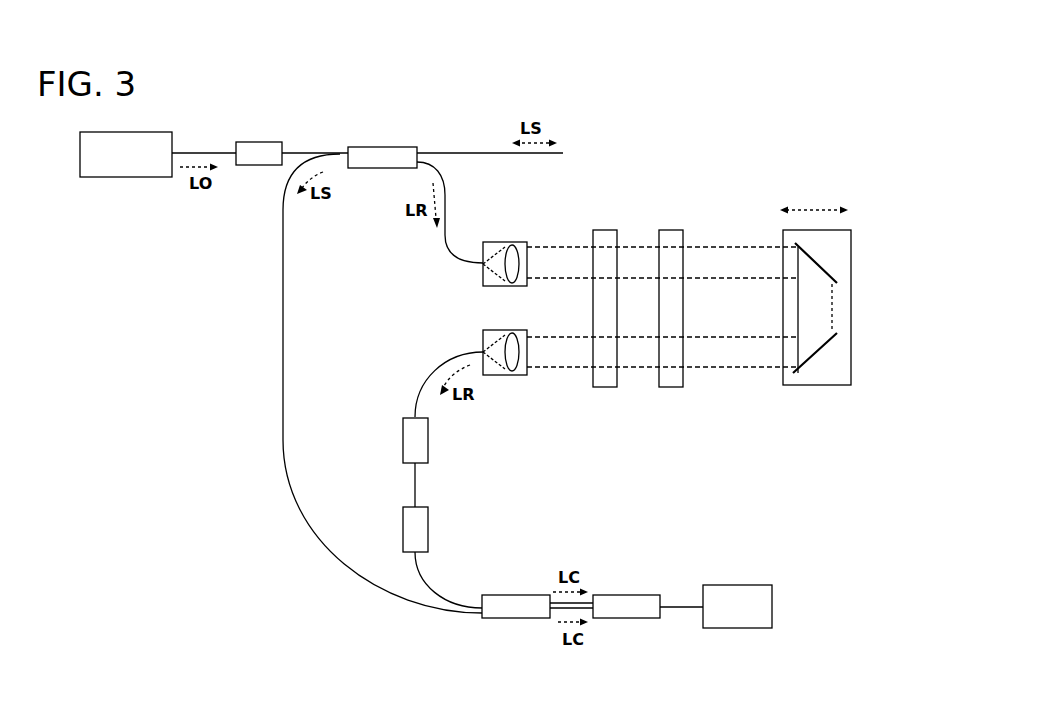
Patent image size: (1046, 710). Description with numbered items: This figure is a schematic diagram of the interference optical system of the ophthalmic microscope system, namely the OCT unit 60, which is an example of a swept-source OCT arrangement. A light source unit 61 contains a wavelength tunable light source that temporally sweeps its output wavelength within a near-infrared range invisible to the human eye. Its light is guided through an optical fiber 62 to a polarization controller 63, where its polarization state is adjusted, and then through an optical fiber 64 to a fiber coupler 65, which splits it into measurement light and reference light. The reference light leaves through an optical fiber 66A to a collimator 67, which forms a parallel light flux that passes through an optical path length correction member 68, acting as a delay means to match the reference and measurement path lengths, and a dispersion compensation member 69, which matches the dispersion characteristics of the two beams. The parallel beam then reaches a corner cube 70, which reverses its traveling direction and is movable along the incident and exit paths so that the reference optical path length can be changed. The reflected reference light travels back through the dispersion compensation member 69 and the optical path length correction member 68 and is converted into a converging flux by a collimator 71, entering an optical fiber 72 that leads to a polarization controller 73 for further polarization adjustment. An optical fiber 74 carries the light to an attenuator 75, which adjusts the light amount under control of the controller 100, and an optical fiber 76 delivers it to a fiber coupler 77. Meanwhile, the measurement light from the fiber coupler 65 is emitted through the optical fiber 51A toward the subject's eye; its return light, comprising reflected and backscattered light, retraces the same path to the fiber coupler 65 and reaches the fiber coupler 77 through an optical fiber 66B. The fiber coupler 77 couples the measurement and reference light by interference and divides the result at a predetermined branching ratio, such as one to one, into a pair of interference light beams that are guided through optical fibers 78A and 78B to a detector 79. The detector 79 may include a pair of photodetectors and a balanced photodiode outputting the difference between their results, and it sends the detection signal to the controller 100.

The OCT unit 60 is at (814, 140).
The light source unit 61 is at (130, 178).
The optical fiber 62 is at (193, 150).
The polarization controller 63 is at (263, 141).
The optical fiber 64 is at (305, 151).
The fiber coupler 65 is at (378, 169).
The optical fiber 51A is at (473, 150).
The optical fiber 66A is at (447, 205).
The optical fiber 66B is at (285, 313).
The collimator 67 is at (520, 242).
The optical path length correction member 68 is at (607, 230).
The dispersion compensation member 69 is at (673, 230).
The corner cube 70 is at (850, 230).
The collimator 71 is at (510, 375).
The optical fiber 72 is at (428, 370).
The polarization controller 73 is at (428, 440).
The optical fiber 74 is at (417, 482).
The attenuator 75 is at (428, 525).
The optical fiber 76 is at (442, 587).
The fiber coupler 77 is at (515, 595).
The optical fiber 78A is at (592, 597).
The optical fiber 78B is at (552, 620).
The detector 79 is at (623, 594).
The controller 100 is at (725, 629).